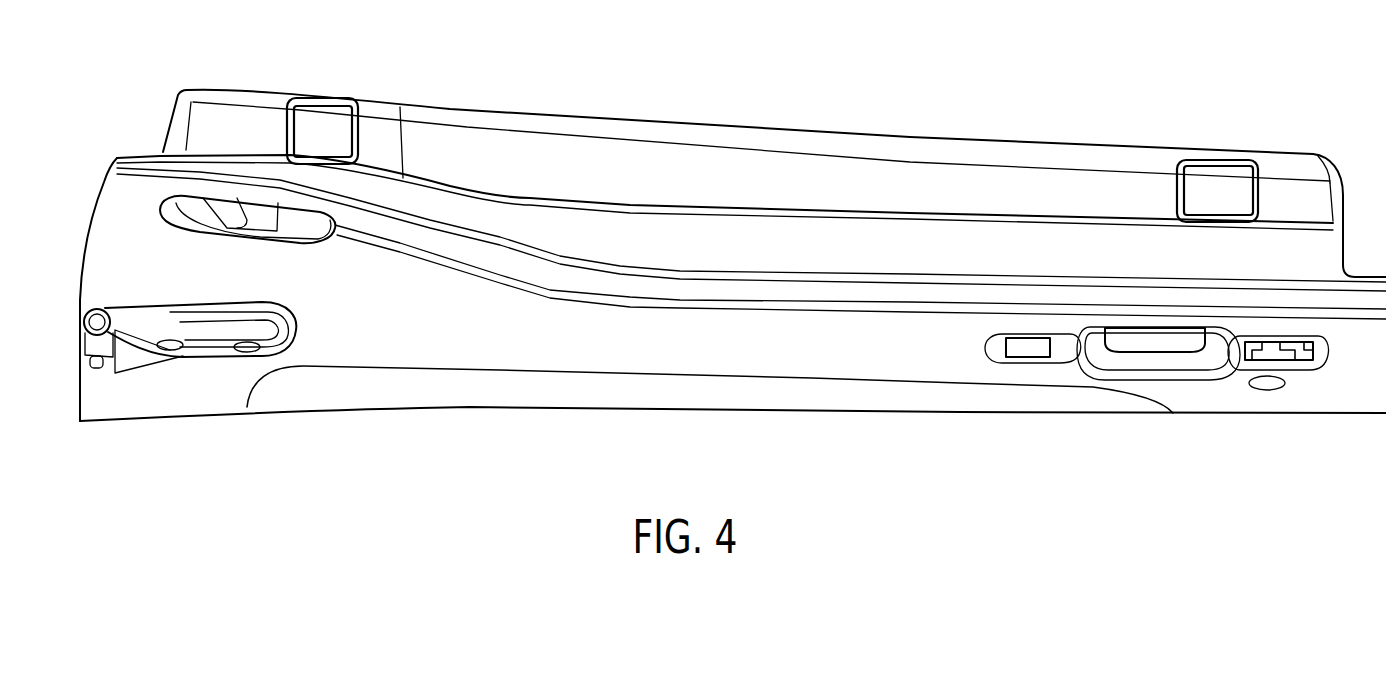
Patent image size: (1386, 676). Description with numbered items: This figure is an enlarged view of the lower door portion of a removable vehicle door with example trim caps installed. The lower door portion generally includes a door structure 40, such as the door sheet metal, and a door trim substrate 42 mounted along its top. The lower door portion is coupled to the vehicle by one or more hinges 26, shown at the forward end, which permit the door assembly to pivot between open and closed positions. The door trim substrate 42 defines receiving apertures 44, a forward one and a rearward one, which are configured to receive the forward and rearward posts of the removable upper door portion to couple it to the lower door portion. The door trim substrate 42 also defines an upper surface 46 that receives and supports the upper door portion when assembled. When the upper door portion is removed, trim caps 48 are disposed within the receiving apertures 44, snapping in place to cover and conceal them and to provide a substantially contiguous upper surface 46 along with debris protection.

The hinge 26 is at (135, 353).
The door structure 40 is at (812, 388).
The door trim substrate 42 is at (932, 137).
The receiving aperture 44 is at (343, 108).
The upper surface 46 is at (722, 162).
The trim cap 48 is at (318, 125).